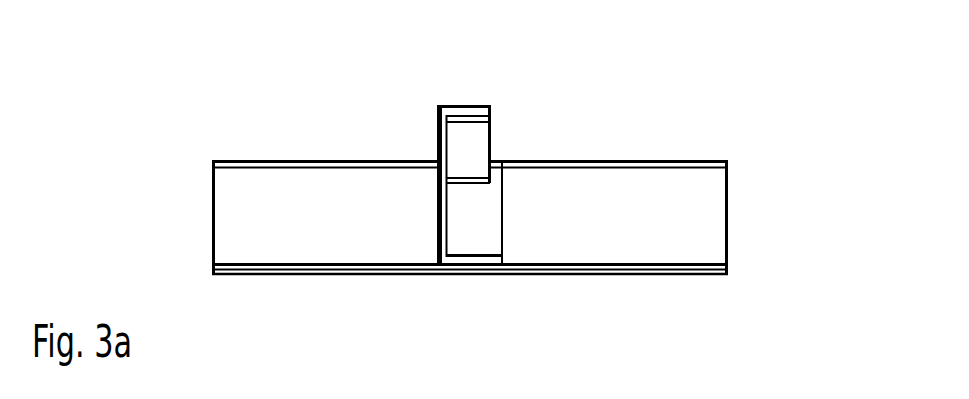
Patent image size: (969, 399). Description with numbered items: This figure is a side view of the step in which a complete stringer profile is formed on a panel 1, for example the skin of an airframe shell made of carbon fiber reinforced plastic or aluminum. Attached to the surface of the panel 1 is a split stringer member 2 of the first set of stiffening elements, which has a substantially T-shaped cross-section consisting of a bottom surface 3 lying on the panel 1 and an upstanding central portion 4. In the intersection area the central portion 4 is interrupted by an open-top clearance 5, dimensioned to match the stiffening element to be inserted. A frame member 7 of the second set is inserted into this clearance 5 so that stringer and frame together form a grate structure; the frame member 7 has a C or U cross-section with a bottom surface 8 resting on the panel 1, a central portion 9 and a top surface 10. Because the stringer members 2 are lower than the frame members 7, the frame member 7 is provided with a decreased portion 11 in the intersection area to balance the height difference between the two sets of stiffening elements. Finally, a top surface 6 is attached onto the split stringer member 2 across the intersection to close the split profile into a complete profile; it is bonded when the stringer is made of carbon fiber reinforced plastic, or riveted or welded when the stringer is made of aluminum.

The panel 1 is at (257, 276).
The split stringer member 2 is at (504, 215).
The bottom surface 3 is at (728, 267).
The central portion 4 is at (618, 185).
The clearance 5 is at (488, 198).
The top surface 6 is at (290, 160).
The frame member 7 is at (463, 179).
The bottom surface 8 is at (469, 259).
The hollow space 9 is at (449, 223).
The top surface 10 is at (482, 108).
The decreased portion 11 is at (467, 180).